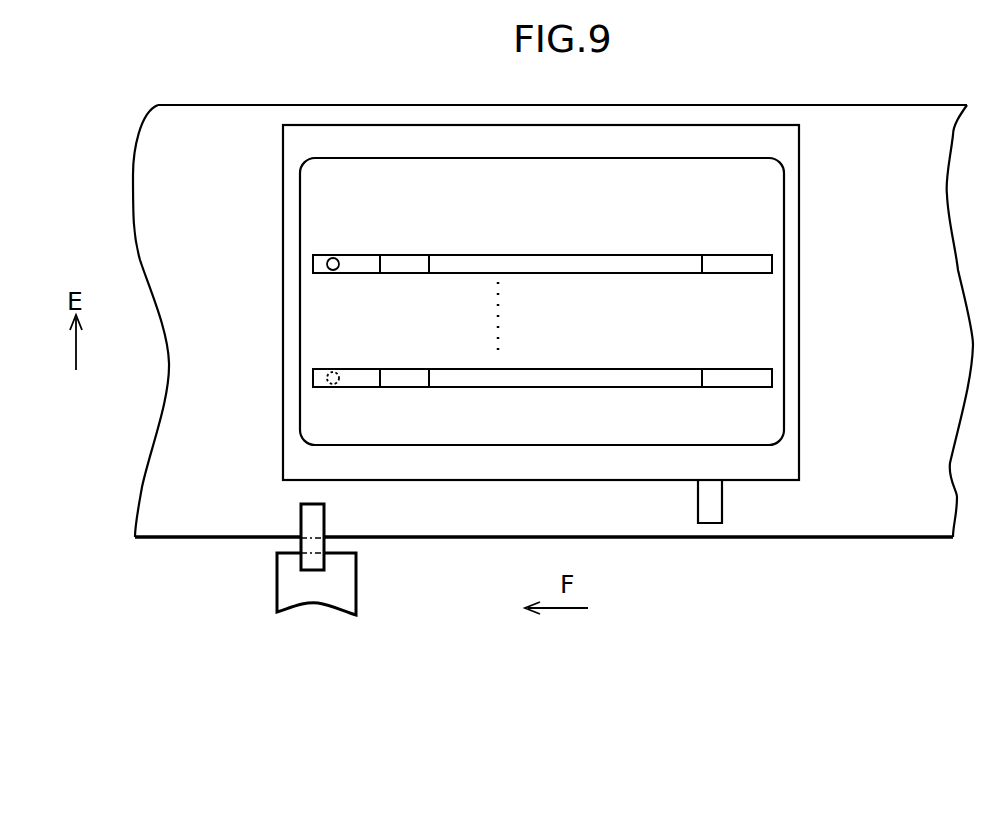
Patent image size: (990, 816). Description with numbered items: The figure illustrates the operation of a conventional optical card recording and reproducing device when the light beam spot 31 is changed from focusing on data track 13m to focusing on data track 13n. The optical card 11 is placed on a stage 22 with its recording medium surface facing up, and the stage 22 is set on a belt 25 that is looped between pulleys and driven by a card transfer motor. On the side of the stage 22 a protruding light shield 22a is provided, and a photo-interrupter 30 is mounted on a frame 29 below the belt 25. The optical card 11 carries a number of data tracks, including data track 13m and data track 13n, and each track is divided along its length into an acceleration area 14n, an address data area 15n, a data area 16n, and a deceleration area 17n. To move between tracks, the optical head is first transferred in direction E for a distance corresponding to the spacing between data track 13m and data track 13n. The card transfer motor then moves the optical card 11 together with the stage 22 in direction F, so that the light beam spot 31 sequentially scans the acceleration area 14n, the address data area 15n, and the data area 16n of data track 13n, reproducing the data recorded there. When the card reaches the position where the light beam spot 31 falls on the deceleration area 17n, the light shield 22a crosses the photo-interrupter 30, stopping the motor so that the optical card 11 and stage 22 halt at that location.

The optical card 11 is at (787, 193).
The data track 13n is at (774, 265).
The data track 13m is at (774, 378).
The acceleration area 14n is at (358, 260).
The address data area 15n is at (418, 262).
The data area 16n is at (603, 262).
The deceleration area 17n is at (726, 262).
The stage 22 is at (802, 455).
The light shield 22a is at (712, 516).
The belt 25 is at (833, 522).
The frame 29 is at (349, 590).
The photo-interrupter 30 is at (314, 566).
The light beam spot 31 is at (332, 272).